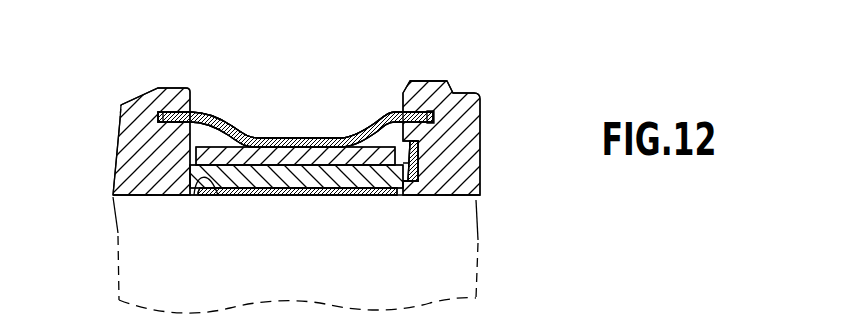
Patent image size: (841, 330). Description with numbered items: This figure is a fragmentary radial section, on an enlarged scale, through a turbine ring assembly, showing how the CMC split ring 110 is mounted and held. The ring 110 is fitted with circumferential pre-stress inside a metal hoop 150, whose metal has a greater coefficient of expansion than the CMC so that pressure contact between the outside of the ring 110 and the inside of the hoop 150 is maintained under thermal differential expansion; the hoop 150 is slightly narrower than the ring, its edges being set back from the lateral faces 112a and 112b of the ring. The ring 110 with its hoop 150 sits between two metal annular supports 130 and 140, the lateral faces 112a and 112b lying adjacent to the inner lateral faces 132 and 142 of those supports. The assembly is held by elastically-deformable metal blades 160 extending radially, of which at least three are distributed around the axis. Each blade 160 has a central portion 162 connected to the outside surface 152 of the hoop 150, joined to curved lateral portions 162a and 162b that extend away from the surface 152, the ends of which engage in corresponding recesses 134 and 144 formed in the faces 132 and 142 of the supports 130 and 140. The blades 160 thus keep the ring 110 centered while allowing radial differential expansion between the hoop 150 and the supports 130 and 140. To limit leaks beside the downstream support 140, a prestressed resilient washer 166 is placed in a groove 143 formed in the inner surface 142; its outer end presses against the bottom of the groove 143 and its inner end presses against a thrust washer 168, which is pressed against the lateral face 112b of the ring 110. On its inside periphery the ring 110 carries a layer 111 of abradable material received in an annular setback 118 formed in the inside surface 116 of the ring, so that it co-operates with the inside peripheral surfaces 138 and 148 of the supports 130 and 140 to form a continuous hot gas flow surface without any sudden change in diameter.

The split ring 110 is at (312, 197).
The layer of abradable material 111 is at (250, 197).
The lateral face 112a is at (174, 197).
The lateral face 112b is at (415, 197).
The inside surface 116 is at (193, 198).
The annular setback 118 is at (292, 178).
The annular support 130 is at (140, 135).
The inner lateral face 132 is at (211, 192).
The recess 134 is at (157, 117).
The inside peripheral surface 138 is at (143, 197).
The annular support 140 is at (455, 135).
The inner lateral face 142 is at (407, 180).
The groove 143 is at (435, 117).
The recess 144 is at (462, 91).
The inside peripheral surface 148 is at (455, 197).
The metal hoop 150 is at (238, 124).
The outside surface 152 is at (392, 112).
The elastically-deformable metal blade 160 is at (338, 147).
The central portion 162 is at (292, 138).
The curved lateral portion 162a is at (200, 112).
The curved lateral portion 162b is at (366, 130).
The resilient washer 166 is at (418, 172).
The thrust washer 168 is at (340, 195).